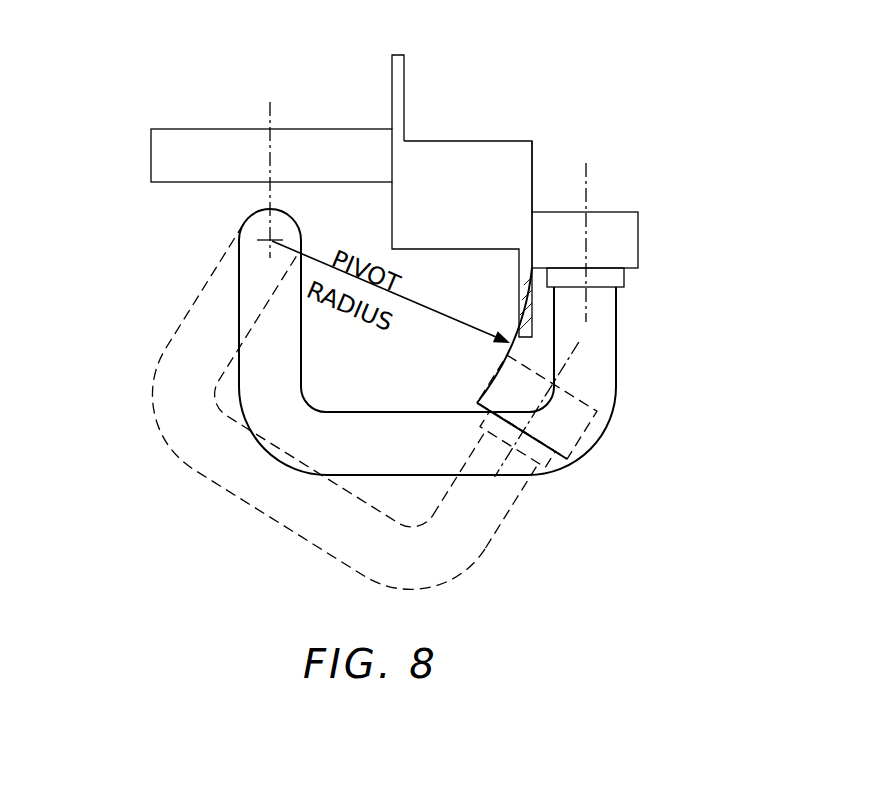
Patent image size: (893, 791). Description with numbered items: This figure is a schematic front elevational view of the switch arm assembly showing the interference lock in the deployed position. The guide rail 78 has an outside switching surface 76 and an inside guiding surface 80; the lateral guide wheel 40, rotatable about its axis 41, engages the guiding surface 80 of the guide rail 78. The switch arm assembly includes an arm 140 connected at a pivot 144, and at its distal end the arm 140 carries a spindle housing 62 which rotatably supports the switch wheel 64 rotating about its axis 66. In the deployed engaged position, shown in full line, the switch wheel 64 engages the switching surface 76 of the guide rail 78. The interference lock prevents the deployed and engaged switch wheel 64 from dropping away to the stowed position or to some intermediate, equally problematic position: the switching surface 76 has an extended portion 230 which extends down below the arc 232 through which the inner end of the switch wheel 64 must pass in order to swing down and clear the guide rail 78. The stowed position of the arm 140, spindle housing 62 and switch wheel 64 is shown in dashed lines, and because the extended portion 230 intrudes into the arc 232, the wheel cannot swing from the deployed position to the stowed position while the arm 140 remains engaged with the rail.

The lateral guide wheel 40 is at (167, 142).
The axis 41 is at (268, 110).
The spindle housing 62 is at (625, 281).
The switch wheel 64 is at (639, 232).
The axis 66 is at (586, 174).
The switching surface 76 is at (533, 161).
The guide rail 78 is at (462, 141).
The guiding surface 80 is at (390, 81).
The arm 140 is at (607, 330).
The pivot 144 is at (242, 257).
The extended portion 230 is at (518, 285).
The arc 232 is at (509, 345).